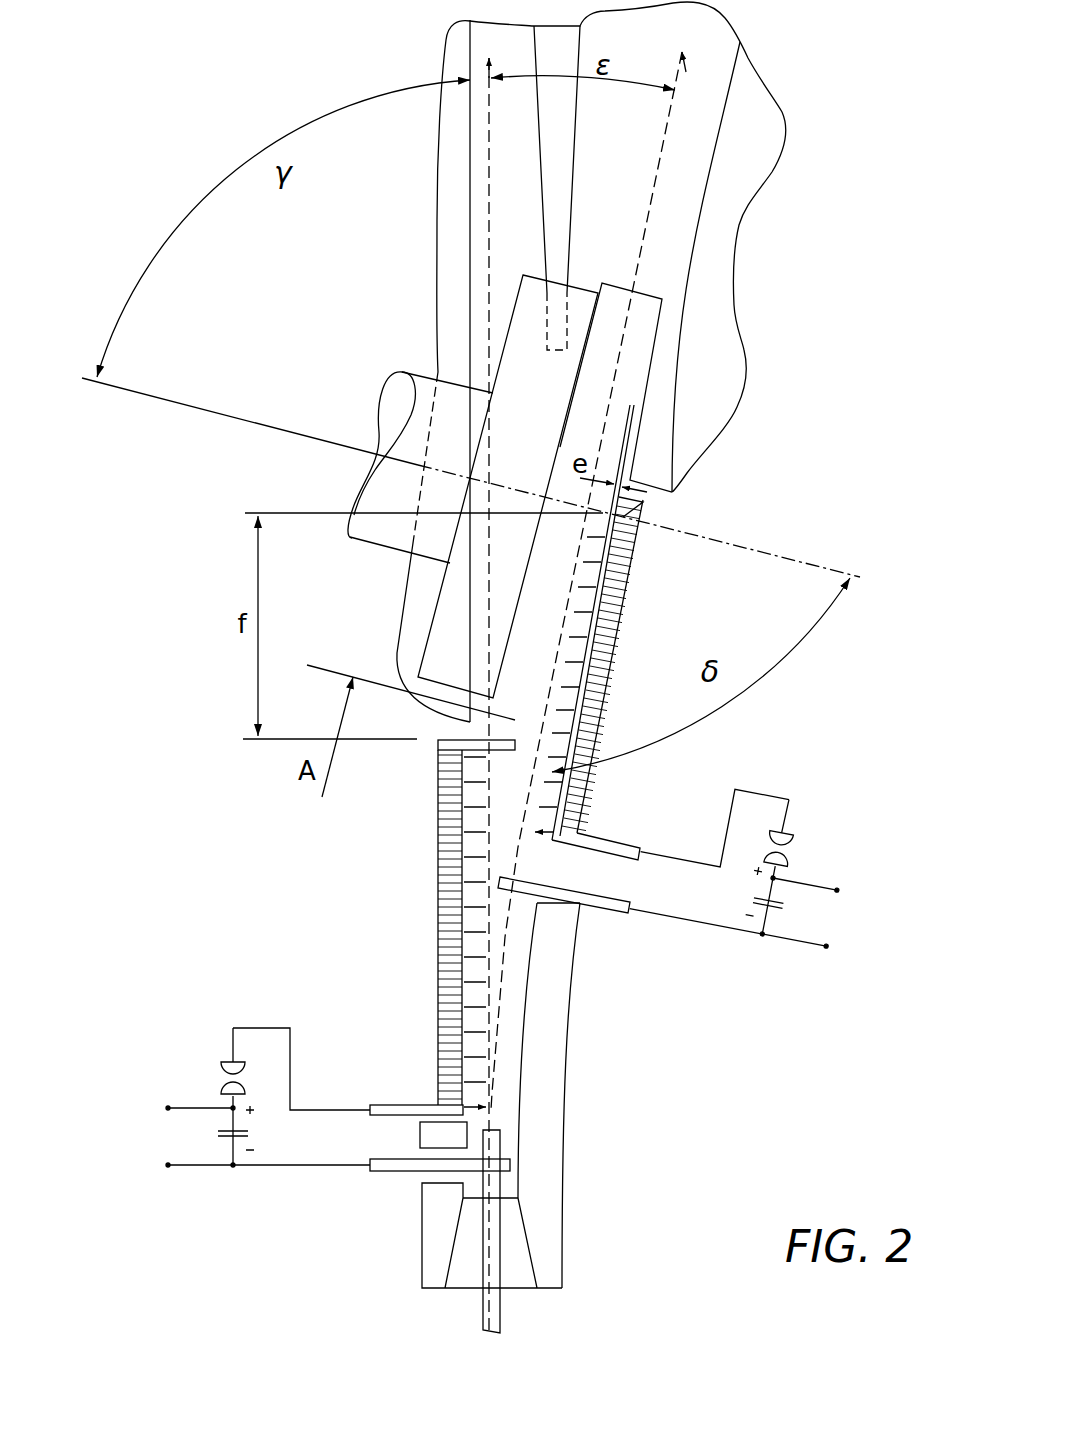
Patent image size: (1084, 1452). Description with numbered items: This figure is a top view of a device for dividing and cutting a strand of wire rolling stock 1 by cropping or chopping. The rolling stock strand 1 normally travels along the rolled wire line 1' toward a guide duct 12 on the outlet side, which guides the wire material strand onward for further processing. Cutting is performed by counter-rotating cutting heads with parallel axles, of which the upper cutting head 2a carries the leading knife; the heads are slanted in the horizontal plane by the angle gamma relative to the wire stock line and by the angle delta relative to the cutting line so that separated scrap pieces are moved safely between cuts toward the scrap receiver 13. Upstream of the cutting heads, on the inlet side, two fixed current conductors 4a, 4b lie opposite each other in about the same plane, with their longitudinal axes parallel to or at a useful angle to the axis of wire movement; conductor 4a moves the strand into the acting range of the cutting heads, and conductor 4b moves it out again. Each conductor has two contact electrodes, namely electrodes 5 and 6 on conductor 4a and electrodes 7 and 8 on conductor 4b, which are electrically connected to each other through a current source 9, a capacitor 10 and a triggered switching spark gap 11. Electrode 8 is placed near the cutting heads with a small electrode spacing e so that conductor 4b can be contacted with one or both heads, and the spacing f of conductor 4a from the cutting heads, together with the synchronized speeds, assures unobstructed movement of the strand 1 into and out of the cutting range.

The rolling stock strand 1 is at (526, 1118).
The rolled wire line 1' is at (374, 694).
The upper cutting head 2a is at (542, 603).
The current conductor 4a is at (450, 922).
The current conductor 4b is at (592, 710).
The contact electrode 5 is at (512, 1163).
The contact electrode 6 is at (250, 740).
The contact electrode 7 is at (510, 887).
The contact electrode 8 is at (647, 500).
The current source 9 is at (183, 1107).
The capacitor 10 is at (217, 1132).
The triggered switching spark gap 11 is at (232, 1062).
The guide duct 12 is at (480, 128).
The scrap receiver 13 is at (710, 83).